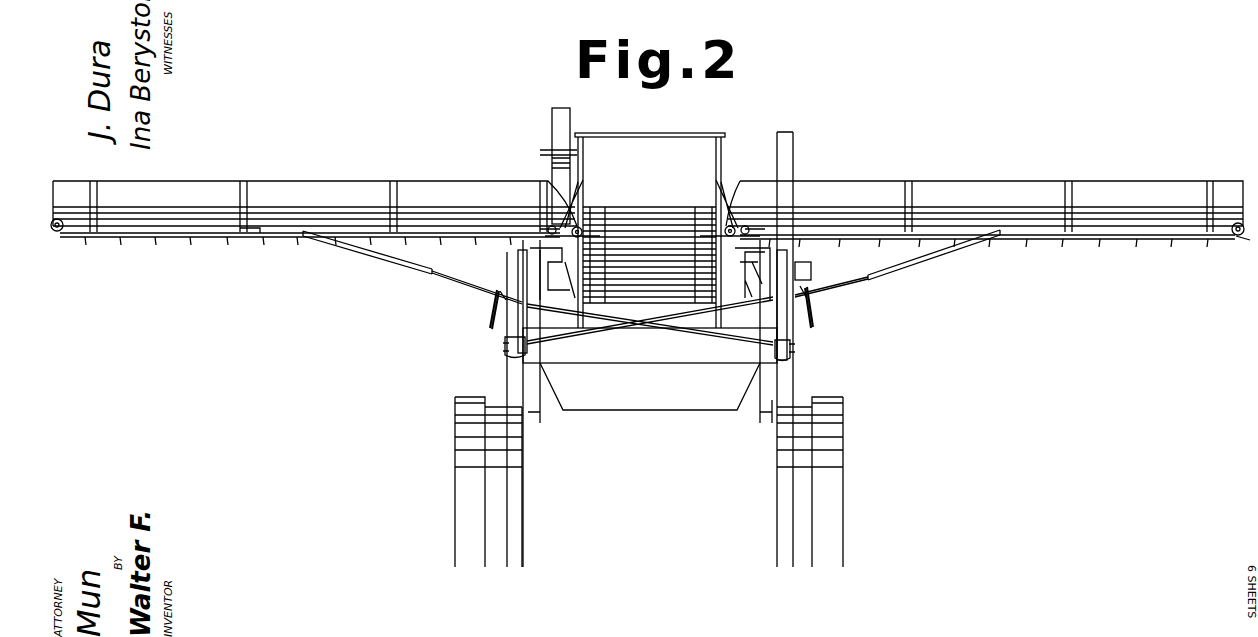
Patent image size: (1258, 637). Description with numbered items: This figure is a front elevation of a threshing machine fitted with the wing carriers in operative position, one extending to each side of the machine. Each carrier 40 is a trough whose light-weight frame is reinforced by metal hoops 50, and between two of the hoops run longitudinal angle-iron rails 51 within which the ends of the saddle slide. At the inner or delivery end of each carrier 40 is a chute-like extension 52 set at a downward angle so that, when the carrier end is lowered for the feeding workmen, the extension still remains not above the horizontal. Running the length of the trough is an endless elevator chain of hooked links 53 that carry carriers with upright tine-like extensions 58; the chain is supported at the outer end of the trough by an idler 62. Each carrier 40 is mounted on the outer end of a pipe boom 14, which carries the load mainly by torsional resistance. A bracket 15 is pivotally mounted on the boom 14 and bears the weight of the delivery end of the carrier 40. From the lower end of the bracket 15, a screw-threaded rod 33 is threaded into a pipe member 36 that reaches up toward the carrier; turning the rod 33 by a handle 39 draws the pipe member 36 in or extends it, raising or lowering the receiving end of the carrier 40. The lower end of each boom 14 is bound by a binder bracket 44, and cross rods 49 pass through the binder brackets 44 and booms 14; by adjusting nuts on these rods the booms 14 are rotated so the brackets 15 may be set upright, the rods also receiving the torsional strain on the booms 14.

The boom 14 is at (516, 325).
The bracket 15 is at (540, 288).
The screw-threaded rod 33 is at (445, 282).
The pipe member 36 is at (350, 248).
The handle 39 is at (486, 311).
The carrier 40 is at (314, 181).
The binder bracket 44 is at (506, 351).
The cross rods 49 is at (670, 330).
The metal hoops 50 is at (909, 181).
The angle-iron rails 51 is at (259, 236).
The chute-like extension 52 is at (552, 188).
The hooked links 53 is at (176, 238).
The tine-like extensions 58 is at (646, 251).
The idler 62 is at (57, 231).